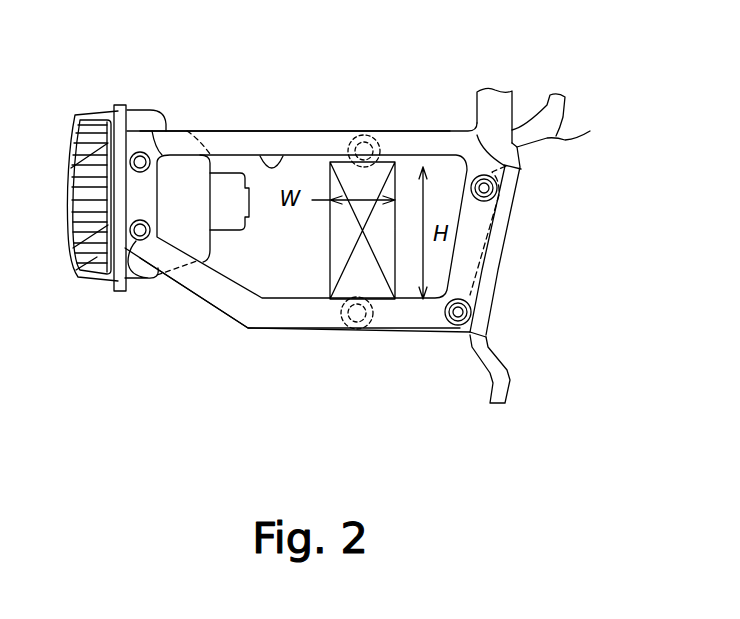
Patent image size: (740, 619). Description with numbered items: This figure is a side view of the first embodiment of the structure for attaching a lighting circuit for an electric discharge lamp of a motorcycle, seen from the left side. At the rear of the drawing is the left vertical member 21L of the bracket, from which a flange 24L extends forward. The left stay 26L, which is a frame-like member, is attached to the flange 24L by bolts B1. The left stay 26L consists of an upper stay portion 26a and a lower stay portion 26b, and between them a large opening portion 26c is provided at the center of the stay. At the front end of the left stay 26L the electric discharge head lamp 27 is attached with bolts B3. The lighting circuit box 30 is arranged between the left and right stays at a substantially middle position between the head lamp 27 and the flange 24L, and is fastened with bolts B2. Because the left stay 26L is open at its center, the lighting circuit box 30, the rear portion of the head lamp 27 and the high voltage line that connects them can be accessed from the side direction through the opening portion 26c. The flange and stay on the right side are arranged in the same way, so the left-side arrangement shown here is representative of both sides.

The head lamp 27 is at (96, 110).
The bolt B3 is at (142, 152).
The left stay 26L is at (232, 327).
The upper stay portion 26a is at (302, 130).
The lower stay portion 26b is at (282, 328).
The opening portion 26c is at (260, 156).
The bolt B2 is at (367, 135).
The lighting circuit box 30 is at (395, 268).
The left vertical member 21L is at (590, 131).
The bolt B1 is at (497, 188).
The flange 24L is at (470, 245).